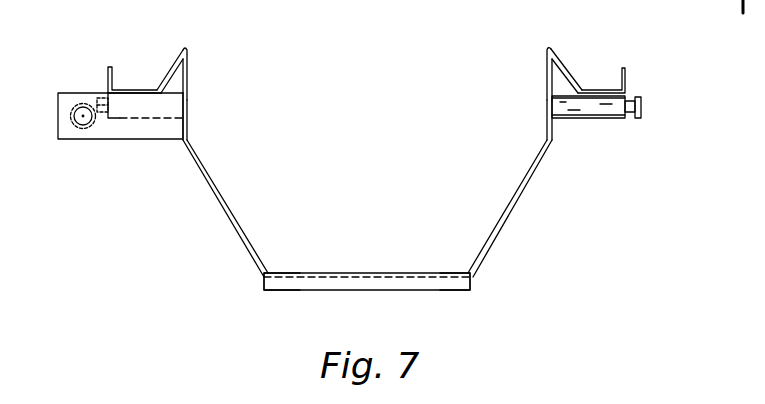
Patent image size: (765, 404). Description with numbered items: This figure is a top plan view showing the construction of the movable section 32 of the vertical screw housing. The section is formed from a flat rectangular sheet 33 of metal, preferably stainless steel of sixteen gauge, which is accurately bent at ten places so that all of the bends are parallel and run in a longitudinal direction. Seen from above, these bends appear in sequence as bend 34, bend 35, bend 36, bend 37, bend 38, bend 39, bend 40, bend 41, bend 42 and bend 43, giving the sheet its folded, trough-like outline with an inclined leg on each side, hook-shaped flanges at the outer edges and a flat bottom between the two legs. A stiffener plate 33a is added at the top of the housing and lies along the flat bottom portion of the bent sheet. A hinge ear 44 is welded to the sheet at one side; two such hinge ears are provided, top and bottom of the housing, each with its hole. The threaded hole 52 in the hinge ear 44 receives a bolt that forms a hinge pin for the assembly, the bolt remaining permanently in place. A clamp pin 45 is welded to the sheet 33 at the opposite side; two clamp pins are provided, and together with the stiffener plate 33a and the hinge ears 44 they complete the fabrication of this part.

The movable section 32 is at (221, 211).
The flat rectangular sheet 33 is at (512, 218).
The stiffener plate 33a is at (445, 292).
The bend 34 is at (115, 88).
The bend 35 is at (153, 88).
The bend 36 is at (187, 52).
The bend 37 is at (188, 138).
The bend 38 is at (268, 273).
The bend 39 is at (470, 273).
The bend 40 is at (546, 137).
The bend 41 is at (548, 45).
The bend 42 is at (580, 90).
The bend 43 is at (617, 88).
The hinge ear 44 is at (68, 93).
The clamp pin 45 is at (642, 105).
The threaded hole 52 is at (80, 125).